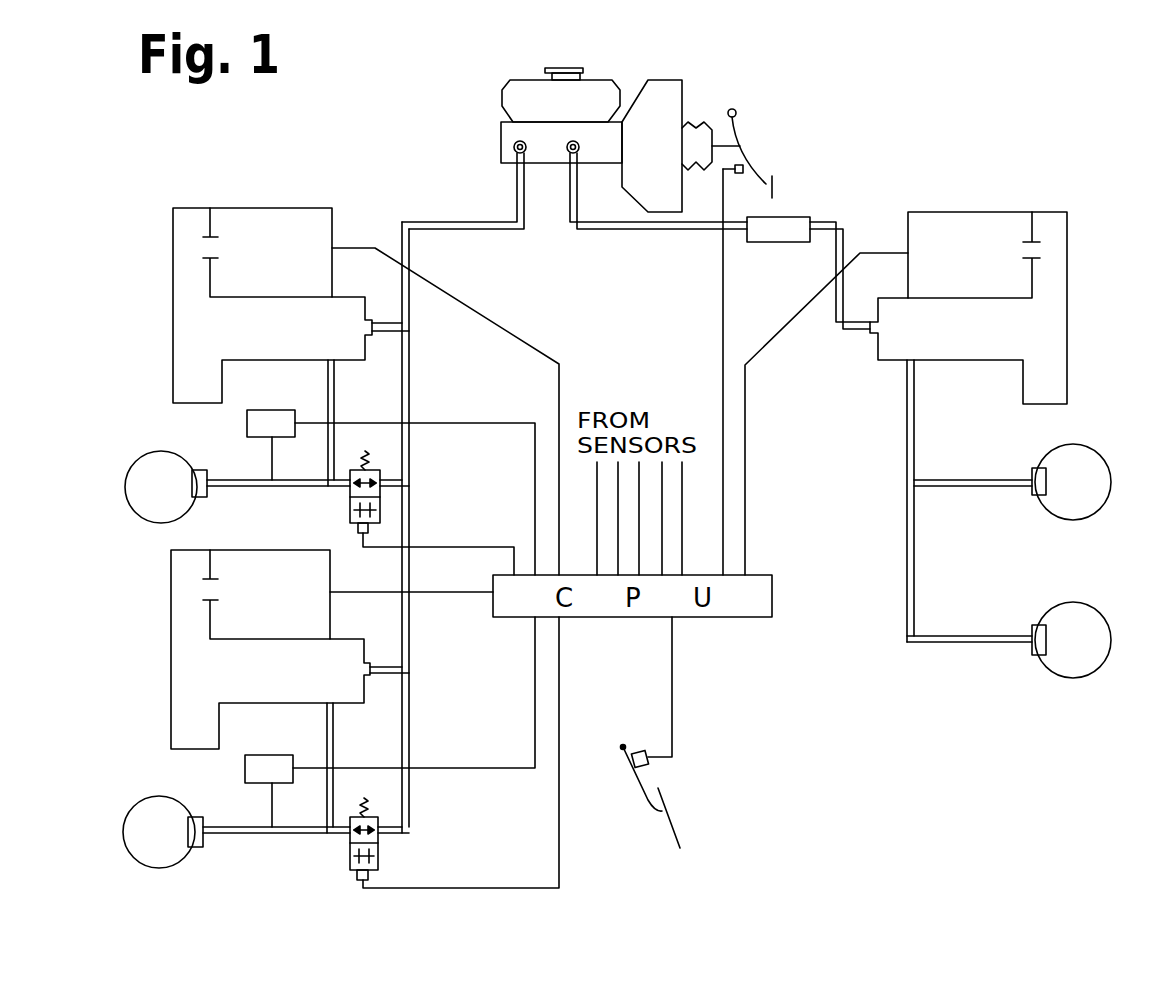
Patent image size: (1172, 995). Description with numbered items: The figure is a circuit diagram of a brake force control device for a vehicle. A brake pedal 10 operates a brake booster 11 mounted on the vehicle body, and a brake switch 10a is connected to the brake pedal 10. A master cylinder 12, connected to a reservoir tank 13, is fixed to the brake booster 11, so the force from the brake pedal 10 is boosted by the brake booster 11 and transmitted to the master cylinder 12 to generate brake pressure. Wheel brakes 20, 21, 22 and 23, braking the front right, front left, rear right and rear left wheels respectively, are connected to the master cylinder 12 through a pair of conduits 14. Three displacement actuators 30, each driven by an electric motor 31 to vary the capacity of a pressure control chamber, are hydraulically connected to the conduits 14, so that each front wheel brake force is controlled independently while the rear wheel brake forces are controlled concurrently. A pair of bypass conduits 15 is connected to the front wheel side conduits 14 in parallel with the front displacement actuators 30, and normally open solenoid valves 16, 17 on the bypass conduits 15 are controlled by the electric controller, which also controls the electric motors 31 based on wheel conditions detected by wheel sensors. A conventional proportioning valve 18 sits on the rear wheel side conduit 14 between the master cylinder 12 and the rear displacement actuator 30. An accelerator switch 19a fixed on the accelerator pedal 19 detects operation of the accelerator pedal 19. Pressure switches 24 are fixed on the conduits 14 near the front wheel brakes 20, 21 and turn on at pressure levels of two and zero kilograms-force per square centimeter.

The brake pedal 10 is at (775, 165).
The brake switch 10a is at (745, 167).
The brake booster 11 is at (673, 98).
The master cylinder 12 is at (508, 130).
The reservoir tank 13 is at (512, 97).
The conduits 14 is at (483, 230).
The bypass conduits 15 is at (409, 372).
The solenoid valve 16 is at (350, 500).
The solenoid valve 17 is at (350, 848).
The proportioning valve 18 is at (805, 217).
The accelerator pedal 19 is at (673, 822).
The accelerator switch 19a is at (641, 752).
The wheel brake 20 is at (197, 470).
The wheel brake 21 is at (197, 818).
The wheel brake 22 is at (1036, 468).
The wheel brake 23 is at (1036, 625).
The pressure switch 24 is at (266, 410).
The displacement actuator 30 is at (170, 292).
The electric motor 31 is at (250, 208).